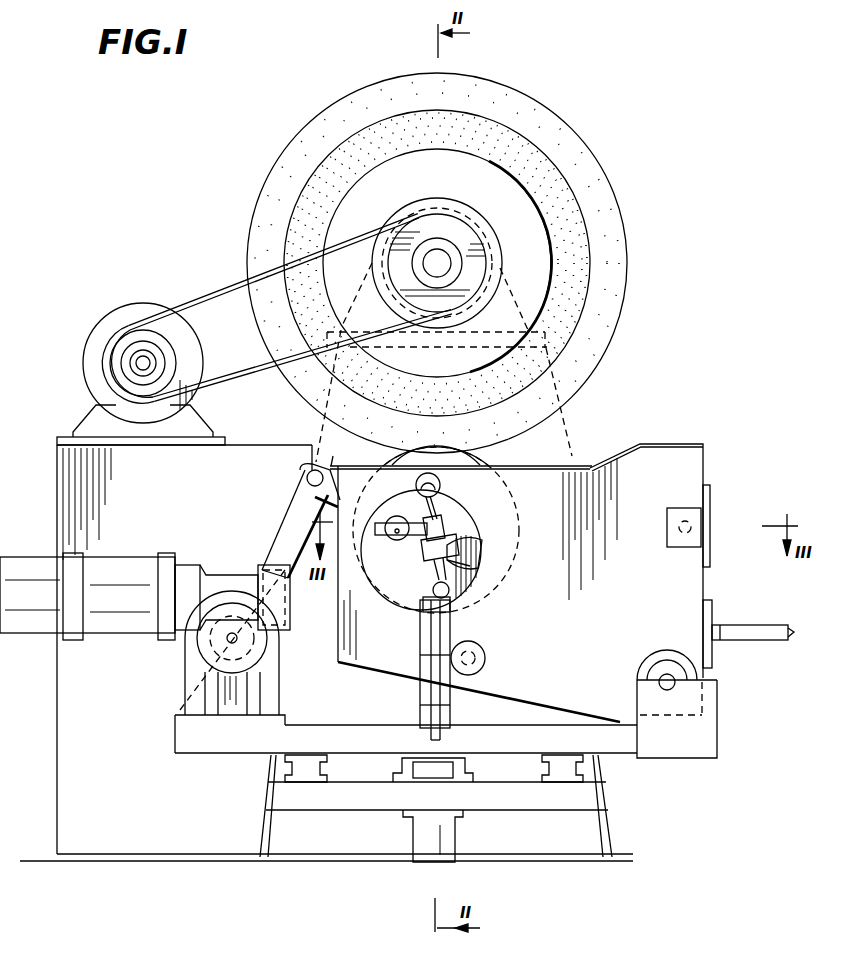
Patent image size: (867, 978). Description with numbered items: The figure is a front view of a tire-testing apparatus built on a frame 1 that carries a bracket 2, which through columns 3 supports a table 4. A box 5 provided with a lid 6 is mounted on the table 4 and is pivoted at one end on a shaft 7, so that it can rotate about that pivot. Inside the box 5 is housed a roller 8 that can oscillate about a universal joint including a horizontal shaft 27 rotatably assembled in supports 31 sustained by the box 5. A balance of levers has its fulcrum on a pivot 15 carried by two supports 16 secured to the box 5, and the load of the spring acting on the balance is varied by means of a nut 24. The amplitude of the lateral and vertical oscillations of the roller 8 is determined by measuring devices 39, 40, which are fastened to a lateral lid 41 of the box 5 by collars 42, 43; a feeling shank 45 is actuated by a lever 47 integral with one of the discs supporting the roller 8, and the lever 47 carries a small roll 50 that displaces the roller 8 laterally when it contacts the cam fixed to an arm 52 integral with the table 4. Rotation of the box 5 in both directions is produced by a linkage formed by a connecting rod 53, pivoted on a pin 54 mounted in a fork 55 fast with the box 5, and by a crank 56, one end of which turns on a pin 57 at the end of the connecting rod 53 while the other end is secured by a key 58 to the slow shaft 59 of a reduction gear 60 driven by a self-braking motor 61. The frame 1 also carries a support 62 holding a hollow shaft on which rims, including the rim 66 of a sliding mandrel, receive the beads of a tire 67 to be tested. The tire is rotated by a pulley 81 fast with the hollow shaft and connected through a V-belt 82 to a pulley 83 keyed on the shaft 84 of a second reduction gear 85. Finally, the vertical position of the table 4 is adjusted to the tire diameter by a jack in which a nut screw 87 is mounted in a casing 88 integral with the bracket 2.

The frame 1 is at (560, 455).
The bracket 2 is at (348, 800).
The columns 3 is at (577, 770).
The table 4 is at (660, 748).
The box 5 is at (700, 590).
The lid 6 is at (660, 445).
The shaft 7 is at (676, 684).
The roller 8 is at (495, 457).
The pivot 15 is at (478, 647).
The supports 16 is at (485, 662).
The nut 24 is at (724, 628).
The horizontal shaft 27 is at (707, 522).
The supports 31 is at (676, 509).
The measuring device 39 is at (404, 540).
The measuring device 40 is at (442, 490).
The lateral lid 41 is at (379, 595).
The collar 42 is at (396, 506).
The collar 43 is at (422, 570).
The feeling shank 45 is at (468, 549).
The lever 47 is at (470, 568).
The small roll 50 is at (420, 613).
The arm 52 is at (422, 690).
The connecting rod 53 is at (289, 521).
The pin 54 is at (310, 470).
The fork 55 is at (332, 450).
The crank 56 is at (212, 648).
The pin 57 is at (262, 567).
The key 58 is at (228, 645).
The slow shaft 59 is at (200, 692).
The reduction gear 60 is at (237, 700).
The self-braking motor 61 is at (129, 582).
The support 62 is at (444, 362).
The rim 66 is at (538, 230).
The tire 67 is at (617, 264).
The pulley 81 is at (466, 225).
The V-belt 82 is at (243, 289).
The pulley 83 is at (172, 350).
The shaft 84 is at (152, 363).
The reduction gear 85 is at (97, 343).
The nut screw 87 is at (447, 772).
The casing 88 is at (408, 773).